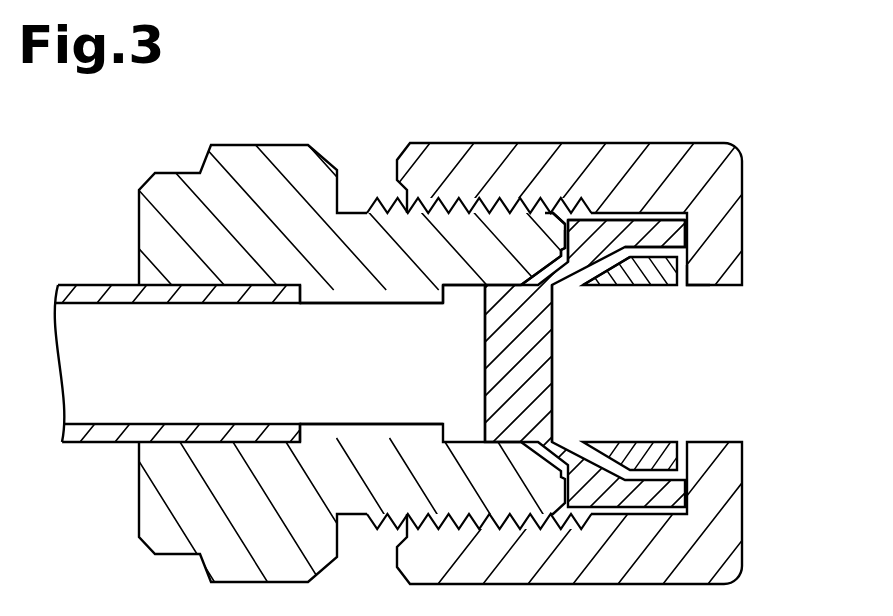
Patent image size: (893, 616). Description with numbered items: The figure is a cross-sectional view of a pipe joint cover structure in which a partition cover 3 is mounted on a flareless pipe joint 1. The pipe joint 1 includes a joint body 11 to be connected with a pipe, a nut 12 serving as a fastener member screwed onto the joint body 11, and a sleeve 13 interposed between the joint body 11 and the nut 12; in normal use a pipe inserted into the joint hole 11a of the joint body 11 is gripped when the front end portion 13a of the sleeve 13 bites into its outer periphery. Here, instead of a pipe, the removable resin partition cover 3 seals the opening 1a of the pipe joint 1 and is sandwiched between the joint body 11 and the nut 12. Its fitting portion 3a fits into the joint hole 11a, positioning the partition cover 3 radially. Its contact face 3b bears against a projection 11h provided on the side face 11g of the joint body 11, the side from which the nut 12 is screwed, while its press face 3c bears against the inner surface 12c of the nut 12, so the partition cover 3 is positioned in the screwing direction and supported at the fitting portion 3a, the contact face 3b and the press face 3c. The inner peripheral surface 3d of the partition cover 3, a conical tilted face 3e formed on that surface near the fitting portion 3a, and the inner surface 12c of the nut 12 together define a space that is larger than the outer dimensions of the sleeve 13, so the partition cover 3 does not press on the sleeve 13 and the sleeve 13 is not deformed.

The pipe joint 1 is at (93, 163).
The opening 1a is at (380, 368).
The joint body 11 is at (182, 172).
The joint hole 11a is at (460, 287).
The side face 11g is at (556, 212).
The projection 11h is at (566, 236).
The nut 12 is at (441, 143).
The inner surface of the nut 12c is at (690, 287).
The partition cover 3 is at (554, 392).
The fitting portion 3a is at (485, 355).
The contact face 3b is at (562, 252).
The press face 3c is at (737, 170).
The inner peripheral surface 3d is at (688, 247).
The conical tilted face 3e is at (560, 287).
The sleeve 13 is at (662, 287).
The front end portion of the sleeve 13a is at (585, 287).